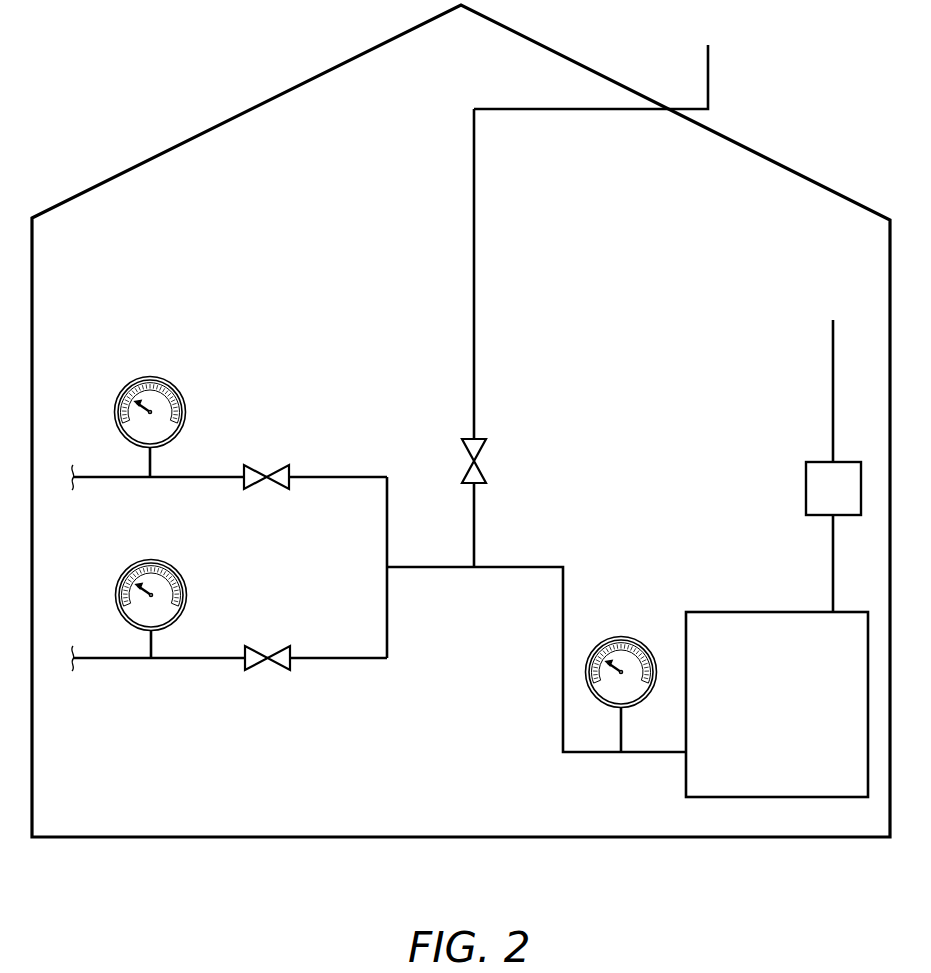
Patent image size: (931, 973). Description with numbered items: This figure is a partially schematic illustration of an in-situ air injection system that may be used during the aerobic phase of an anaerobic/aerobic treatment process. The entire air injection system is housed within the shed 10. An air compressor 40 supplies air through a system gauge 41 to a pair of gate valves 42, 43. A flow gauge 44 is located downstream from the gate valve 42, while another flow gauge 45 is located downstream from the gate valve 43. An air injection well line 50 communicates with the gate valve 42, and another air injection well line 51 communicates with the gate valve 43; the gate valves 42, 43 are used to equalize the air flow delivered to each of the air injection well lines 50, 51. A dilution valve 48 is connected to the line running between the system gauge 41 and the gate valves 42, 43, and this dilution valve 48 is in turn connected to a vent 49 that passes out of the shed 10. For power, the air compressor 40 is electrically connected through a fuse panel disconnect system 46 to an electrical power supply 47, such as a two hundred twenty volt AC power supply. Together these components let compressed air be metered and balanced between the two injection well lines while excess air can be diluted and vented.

The shed 10 is at (330, 70).
The air compressor 40 is at (731, 630).
The system gauge 41 is at (619, 652).
The gate valve 42 is at (252, 464).
The gate valve 43 is at (254, 646).
The flow gauge 44 is at (184, 390).
The flow gauge 45 is at (185, 573).
The fuse panel disconnect system 46 is at (806, 490).
The electrical power supply 47 is at (833, 362).
The dilution valve 48 is at (463, 450).
The vent 49 is at (708, 71).
The air injection well line 50 is at (93, 477).
The air injection well line 51 is at (93, 658).